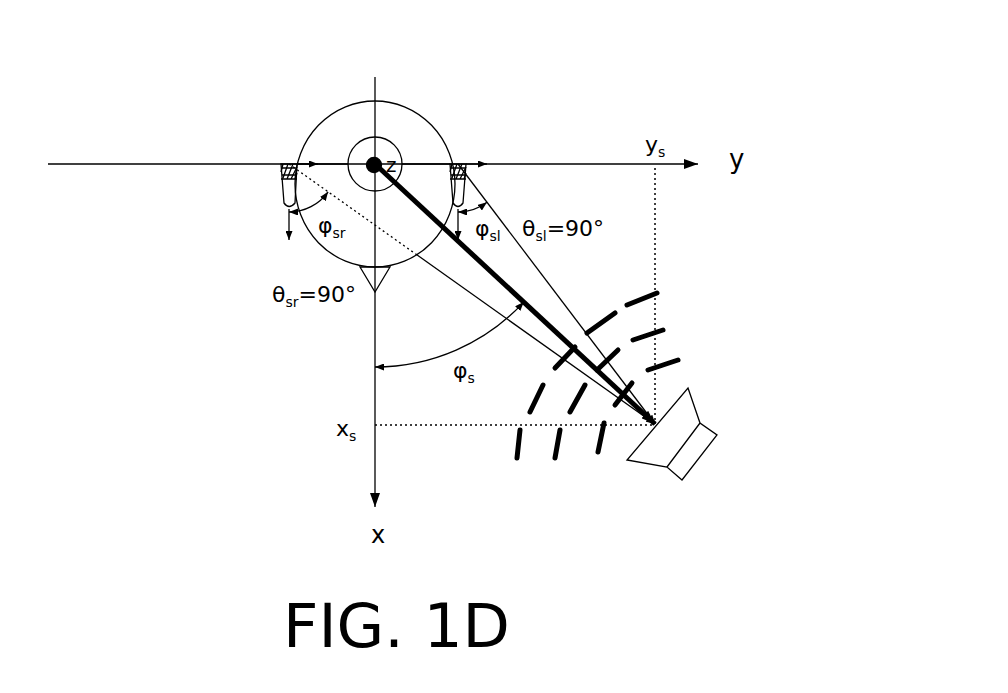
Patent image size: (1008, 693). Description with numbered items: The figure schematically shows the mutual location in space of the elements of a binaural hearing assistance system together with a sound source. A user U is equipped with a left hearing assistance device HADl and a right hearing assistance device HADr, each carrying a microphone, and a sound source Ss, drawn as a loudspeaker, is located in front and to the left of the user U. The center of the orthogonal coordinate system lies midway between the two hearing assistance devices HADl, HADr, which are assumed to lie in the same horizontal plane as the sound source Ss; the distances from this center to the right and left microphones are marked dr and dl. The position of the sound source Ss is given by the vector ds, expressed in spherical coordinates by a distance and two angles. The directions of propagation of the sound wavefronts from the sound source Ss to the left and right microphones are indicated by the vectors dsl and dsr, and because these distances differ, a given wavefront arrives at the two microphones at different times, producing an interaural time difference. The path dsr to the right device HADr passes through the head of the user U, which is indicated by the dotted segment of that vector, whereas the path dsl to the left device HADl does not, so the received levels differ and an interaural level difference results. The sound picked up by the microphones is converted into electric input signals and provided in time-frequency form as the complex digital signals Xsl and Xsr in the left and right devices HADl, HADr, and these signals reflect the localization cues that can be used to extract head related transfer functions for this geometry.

The user U is at (413, 112).
The right hearing assistance device HADr is at (290, 163).
The left hearing assistance device HADl is at (460, 163).
The right digital signal Xsr is at (283, 172).
The left digital signal Xsl is at (468, 170).
The sound source position vector ds is at (543, 318).
The propagation vector to right microphone dsr is at (466, 289).
The propagation vector to left microphone dsl is at (540, 266).
The distance from head center to right microphone dr is at (336, 161).
The distance from head center to left microphone dl is at (415, 160).
The sound source Ss is at (625, 389).